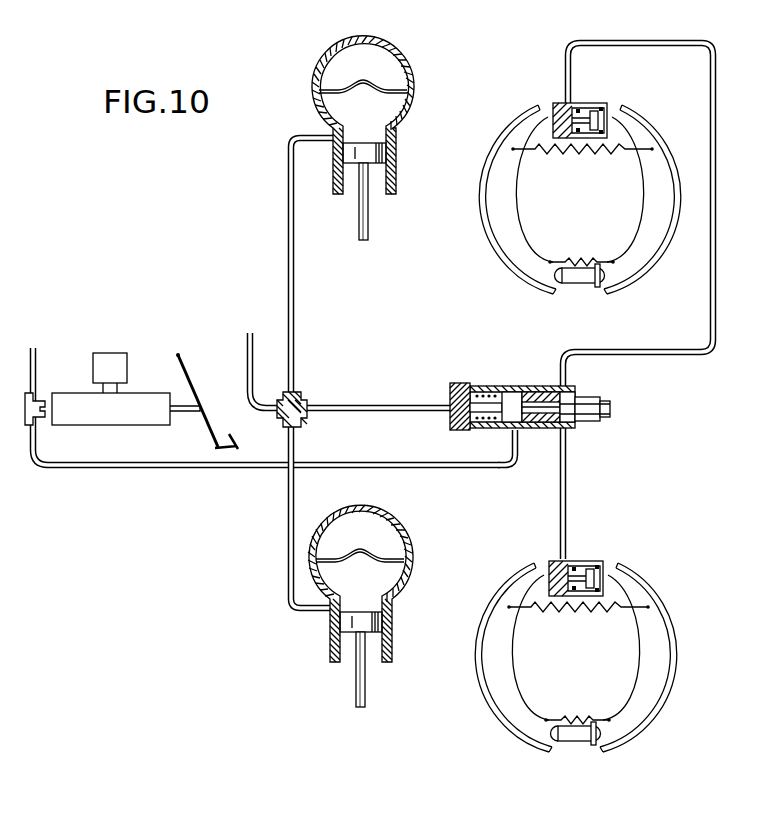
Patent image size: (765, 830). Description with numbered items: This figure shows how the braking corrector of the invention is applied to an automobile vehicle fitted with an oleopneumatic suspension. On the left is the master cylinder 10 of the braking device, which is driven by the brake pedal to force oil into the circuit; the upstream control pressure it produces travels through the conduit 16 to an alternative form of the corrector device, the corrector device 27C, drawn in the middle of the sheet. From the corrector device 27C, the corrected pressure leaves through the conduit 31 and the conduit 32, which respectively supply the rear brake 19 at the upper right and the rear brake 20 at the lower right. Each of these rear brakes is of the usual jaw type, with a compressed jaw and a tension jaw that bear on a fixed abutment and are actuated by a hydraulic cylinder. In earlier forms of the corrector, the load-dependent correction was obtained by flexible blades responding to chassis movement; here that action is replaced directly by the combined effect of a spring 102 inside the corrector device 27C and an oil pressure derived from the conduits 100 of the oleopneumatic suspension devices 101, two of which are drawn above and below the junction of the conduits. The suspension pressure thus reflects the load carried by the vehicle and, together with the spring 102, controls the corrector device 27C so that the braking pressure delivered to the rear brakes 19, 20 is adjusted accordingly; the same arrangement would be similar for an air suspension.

The master cylinder 10 is at (150, 393).
The conduit 16 is at (110, 469).
The rear brake 19 is at (664, 130).
The rear brake 20 is at (662, 596).
The corrector device 27C is at (497, 386).
The conduit 31 is at (641, 350).
The conduit 32 is at (566, 503).
The conduit 100 is at (296, 397).
The oleopneumatic suspension device 101 is at (409, 74).
The spring 102 is at (481, 431).